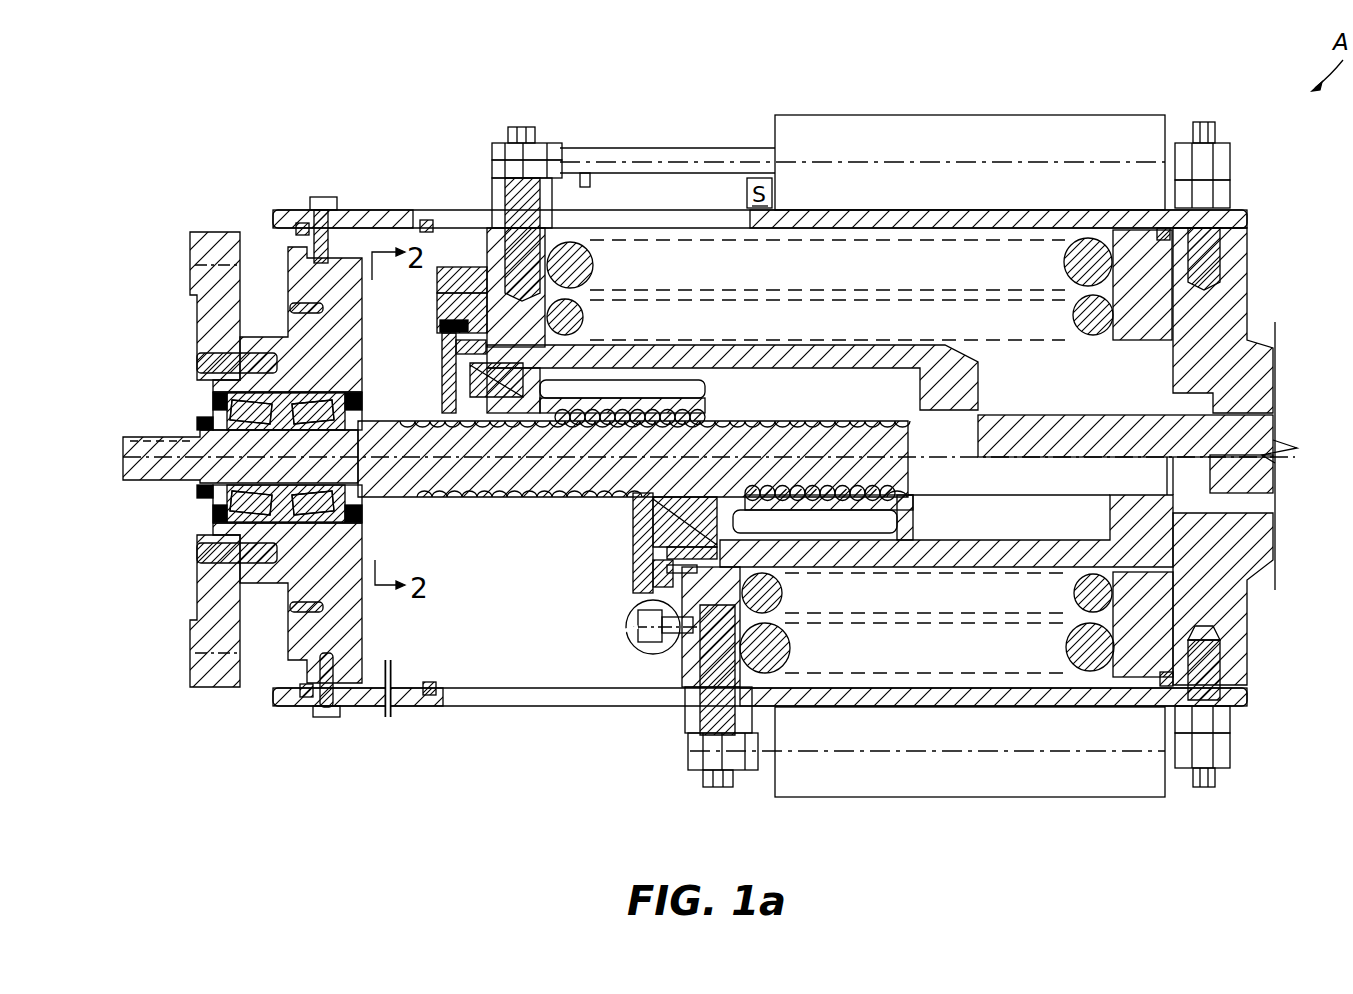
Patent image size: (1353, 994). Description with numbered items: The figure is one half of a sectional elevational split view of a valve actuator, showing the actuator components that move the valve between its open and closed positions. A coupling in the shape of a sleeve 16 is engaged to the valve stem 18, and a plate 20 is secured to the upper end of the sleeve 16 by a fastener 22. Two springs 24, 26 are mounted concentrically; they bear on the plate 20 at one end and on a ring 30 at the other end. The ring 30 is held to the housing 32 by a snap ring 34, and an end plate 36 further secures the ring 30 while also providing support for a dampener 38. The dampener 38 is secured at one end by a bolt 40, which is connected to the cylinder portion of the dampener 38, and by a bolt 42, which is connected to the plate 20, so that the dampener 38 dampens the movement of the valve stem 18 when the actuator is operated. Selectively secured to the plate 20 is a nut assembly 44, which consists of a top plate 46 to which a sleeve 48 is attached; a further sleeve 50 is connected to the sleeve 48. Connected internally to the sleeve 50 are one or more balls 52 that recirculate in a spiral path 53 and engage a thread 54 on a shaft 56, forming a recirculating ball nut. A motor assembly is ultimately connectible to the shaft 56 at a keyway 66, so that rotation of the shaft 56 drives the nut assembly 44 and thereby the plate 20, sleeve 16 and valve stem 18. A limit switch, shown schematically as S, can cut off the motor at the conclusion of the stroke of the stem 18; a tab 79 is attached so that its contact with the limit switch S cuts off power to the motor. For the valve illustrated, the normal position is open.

The sleeve 16 is at (985, 381).
The valve stem 18 is at (1093, 413).
The plate 20 is at (487, 247).
The fastener 22 is at (438, 300).
The spring 24 is at (677, 277).
The spring 26 is at (713, 332).
The ring 30 is at (1133, 238).
The housing 32 is at (506, 704).
The snap ring 34 is at (1166, 688).
The end plate 36 is at (1243, 265).
The dampener 38 is at (960, 115).
The bolt 40 is at (1218, 130).
The bolt 42 is at (516, 126).
The nut assembly 44 is at (433, 363).
The top plate 46 is at (440, 384).
The sleeve 48 is at (468, 413).
The sleeve 50 is at (712, 391).
The balls 52 is at (593, 425).
The spiral path 53 is at (703, 415).
The thread 54 is at (803, 413).
The shaft 56 is at (555, 470).
The keyway 66 is at (152, 432).
The tab 79 is at (590, 182).